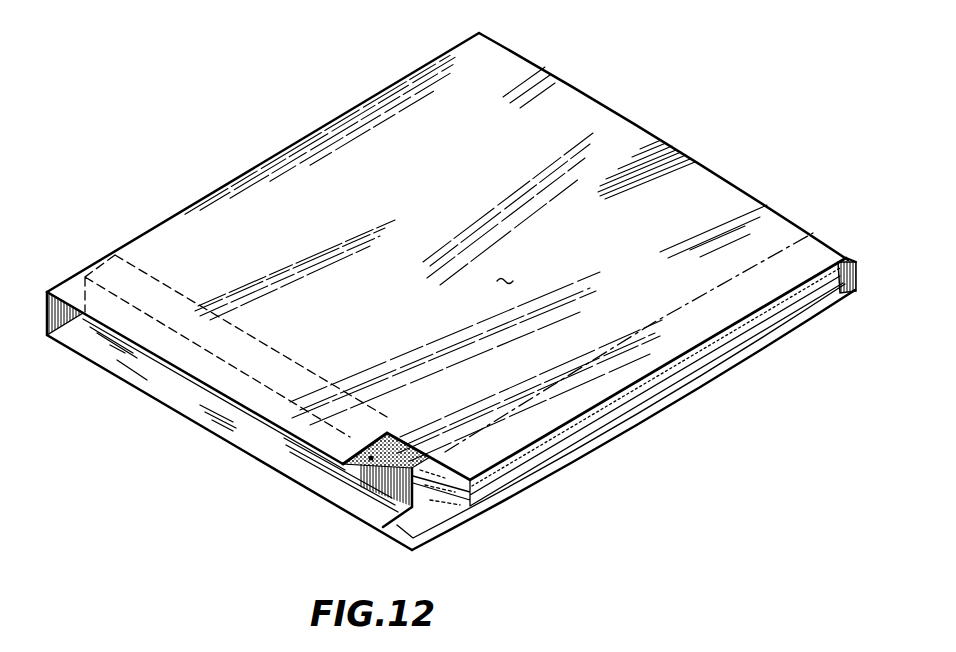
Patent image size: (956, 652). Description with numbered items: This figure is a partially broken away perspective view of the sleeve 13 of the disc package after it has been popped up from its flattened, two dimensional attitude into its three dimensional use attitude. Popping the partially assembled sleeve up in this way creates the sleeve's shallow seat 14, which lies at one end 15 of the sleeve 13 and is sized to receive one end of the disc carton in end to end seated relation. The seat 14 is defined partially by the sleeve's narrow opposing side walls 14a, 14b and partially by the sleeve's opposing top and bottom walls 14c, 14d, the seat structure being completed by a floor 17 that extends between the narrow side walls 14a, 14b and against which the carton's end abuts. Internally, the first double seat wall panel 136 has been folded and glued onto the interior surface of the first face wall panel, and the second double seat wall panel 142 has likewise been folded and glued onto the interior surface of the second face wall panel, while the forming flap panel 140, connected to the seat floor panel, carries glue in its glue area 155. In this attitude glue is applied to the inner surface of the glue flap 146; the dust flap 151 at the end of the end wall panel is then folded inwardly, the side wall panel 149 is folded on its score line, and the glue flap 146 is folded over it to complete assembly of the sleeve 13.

The sleeve 13 is at (722, 99).
The shallow seat 14 is at (240, 423).
The narrow side wall 14a is at (254, 167).
The narrow side wall 14b is at (842, 234).
The top wall 14c is at (445, 338).
The bottom wall 14d is at (435, 497).
The end of sleeve 15 is at (100, 252).
The seat floor 17 is at (370, 455).
The double seat wall panel 136 is at (377, 502).
The forming flap panel 140 is at (302, 357).
The second double seat wall panel 142 is at (362, 486).
The glue flap 146 is at (633, 424).
The side wall panel 149 is at (677, 333).
The dust flap 151 is at (857, 272).
The glue area 155 is at (407, 432).